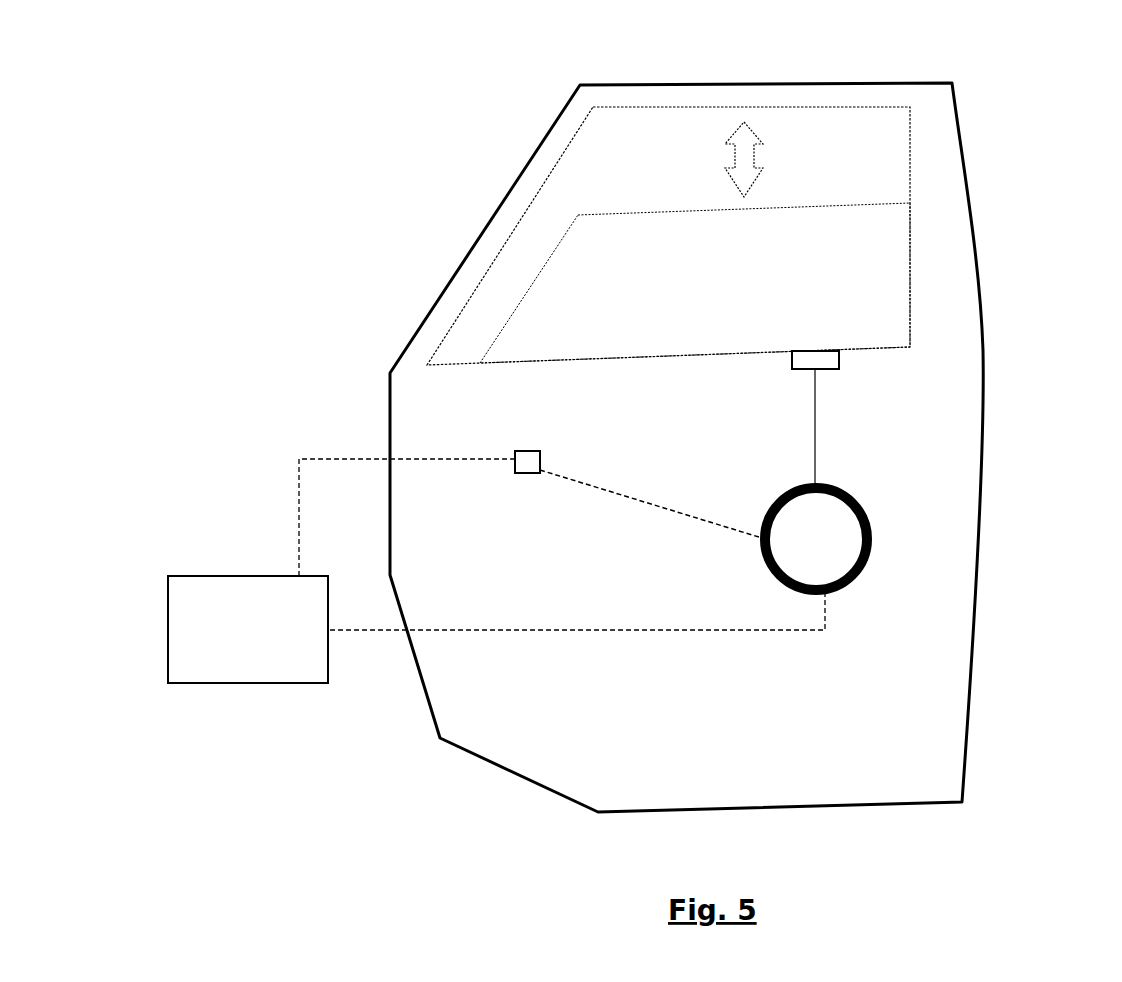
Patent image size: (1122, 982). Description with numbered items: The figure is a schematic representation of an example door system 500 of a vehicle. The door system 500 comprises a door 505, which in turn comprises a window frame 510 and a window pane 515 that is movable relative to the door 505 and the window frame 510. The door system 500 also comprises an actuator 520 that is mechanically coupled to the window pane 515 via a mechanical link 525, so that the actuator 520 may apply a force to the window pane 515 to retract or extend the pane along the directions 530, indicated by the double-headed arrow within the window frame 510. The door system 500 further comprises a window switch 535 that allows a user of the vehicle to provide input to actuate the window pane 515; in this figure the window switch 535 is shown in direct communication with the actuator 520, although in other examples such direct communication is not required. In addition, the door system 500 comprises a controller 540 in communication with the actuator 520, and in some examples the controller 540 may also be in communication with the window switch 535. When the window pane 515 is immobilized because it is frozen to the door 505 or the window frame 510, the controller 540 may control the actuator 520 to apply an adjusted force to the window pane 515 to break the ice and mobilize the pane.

The door system 500 is at (295, 74).
The door 505 is at (947, 743).
The window frame 510 is at (527, 177).
The window pane 515 is at (870, 285).
The actuator 520 is at (872, 538).
The mechanical link 525 is at (815, 422).
The directions 530 is at (750, 158).
The window switch 535 is at (540, 459).
The controller 540 is at (248, 629).